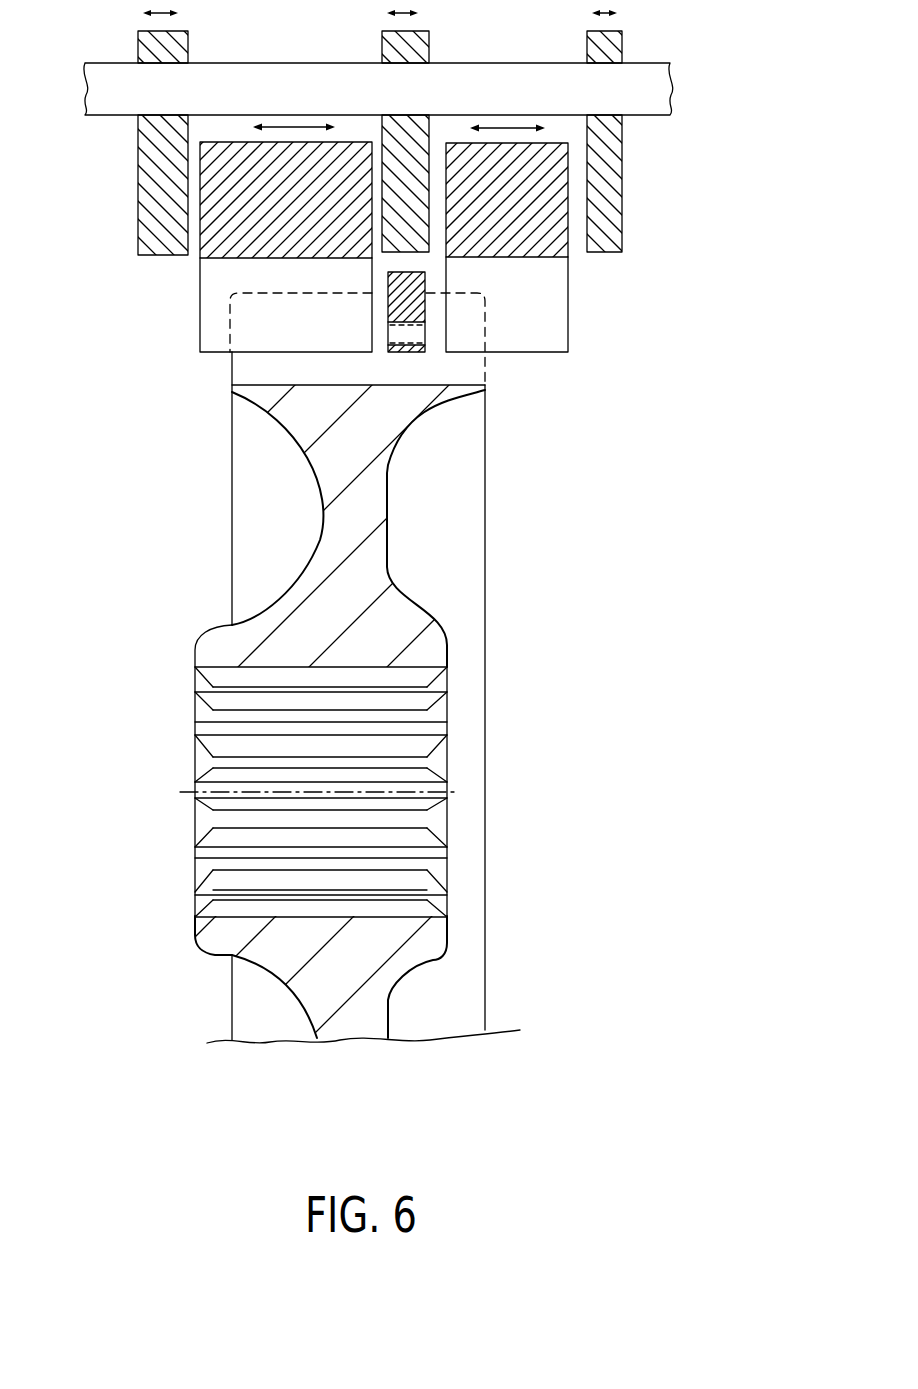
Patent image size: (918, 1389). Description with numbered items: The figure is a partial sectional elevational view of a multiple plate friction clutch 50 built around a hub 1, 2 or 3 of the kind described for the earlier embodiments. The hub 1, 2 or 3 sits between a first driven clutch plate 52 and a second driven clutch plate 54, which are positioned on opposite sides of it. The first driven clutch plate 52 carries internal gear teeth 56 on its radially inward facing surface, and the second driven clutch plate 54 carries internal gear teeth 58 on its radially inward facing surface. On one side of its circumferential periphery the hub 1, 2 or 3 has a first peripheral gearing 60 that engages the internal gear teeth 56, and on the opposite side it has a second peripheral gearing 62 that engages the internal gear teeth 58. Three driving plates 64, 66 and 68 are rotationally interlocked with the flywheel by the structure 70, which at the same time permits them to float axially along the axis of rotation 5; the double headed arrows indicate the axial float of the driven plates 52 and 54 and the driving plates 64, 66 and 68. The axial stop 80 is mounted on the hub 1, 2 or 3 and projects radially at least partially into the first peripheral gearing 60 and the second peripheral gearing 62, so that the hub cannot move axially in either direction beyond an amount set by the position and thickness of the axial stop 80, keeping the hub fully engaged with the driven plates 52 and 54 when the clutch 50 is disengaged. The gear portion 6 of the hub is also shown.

The hub 1 is at (205, 571).
The hub 2 is at (459, 550).
The hub 3 is at (459, 550).
The axis of rotation 5 is at (457, 793).
The toothed gear portion 6 is at (427, 717).
The multiple plate friction clutch 50 is at (712, 378).
The first driven clutch plate 52 is at (587, 290).
The second driven clutch plate 54 is at (178, 296).
The internal gear teeth 56 is at (550, 328).
The internal gear teeth 58 is at (215, 328).
The first peripheral gearing 60 is at (465, 373).
The second peripheral gearing 62 is at (243, 372).
The driving plate 64 is at (614, 44).
The driving plate 66 is at (417, 44).
The driving plate 68 is at (176, 47).
The structure permitting axial float 70 is at (653, 93).
The axial stop 80 is at (410, 353).